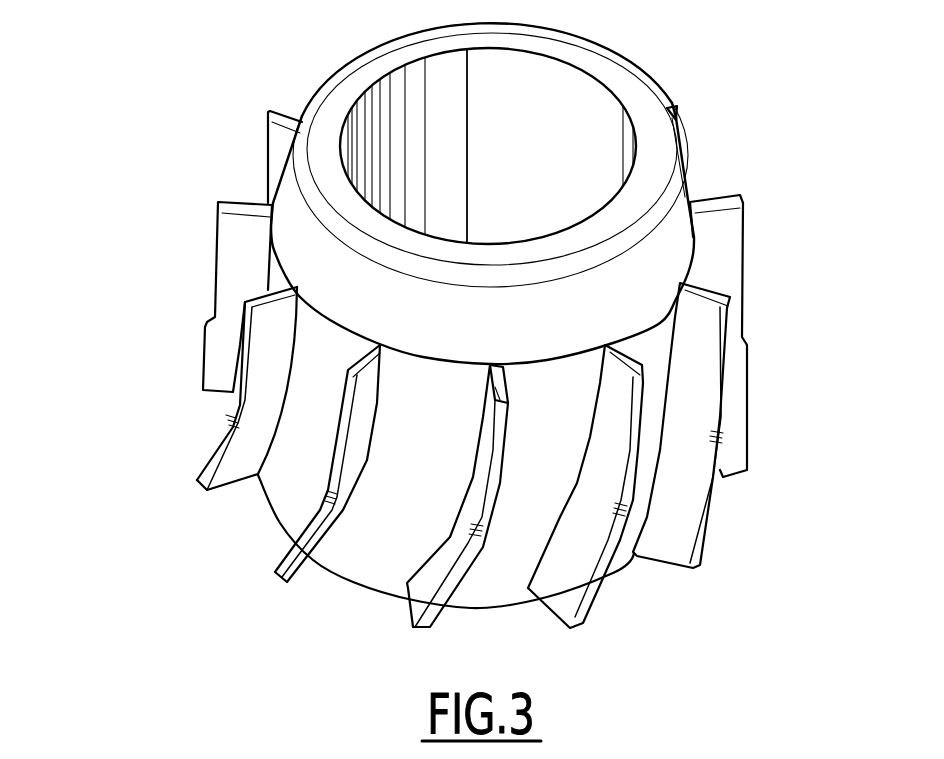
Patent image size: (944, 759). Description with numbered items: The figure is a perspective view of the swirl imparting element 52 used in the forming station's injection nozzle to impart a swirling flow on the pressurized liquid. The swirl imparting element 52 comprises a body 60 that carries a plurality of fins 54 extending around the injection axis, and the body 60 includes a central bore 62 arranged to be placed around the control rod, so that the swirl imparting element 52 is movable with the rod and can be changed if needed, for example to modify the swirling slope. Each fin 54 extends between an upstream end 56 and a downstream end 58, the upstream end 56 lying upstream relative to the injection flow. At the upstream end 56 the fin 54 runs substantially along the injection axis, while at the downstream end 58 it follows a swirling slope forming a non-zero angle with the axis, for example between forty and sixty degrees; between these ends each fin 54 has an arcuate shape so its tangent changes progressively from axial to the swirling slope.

The swirl imparting element 52 is at (170, 366).
The fins 54 is at (247, 443).
The upstream end 56 is at (264, 298).
The downstream end 58 is at (230, 483).
The body 60 is at (673, 233).
The central bore 62 is at (417, 107).